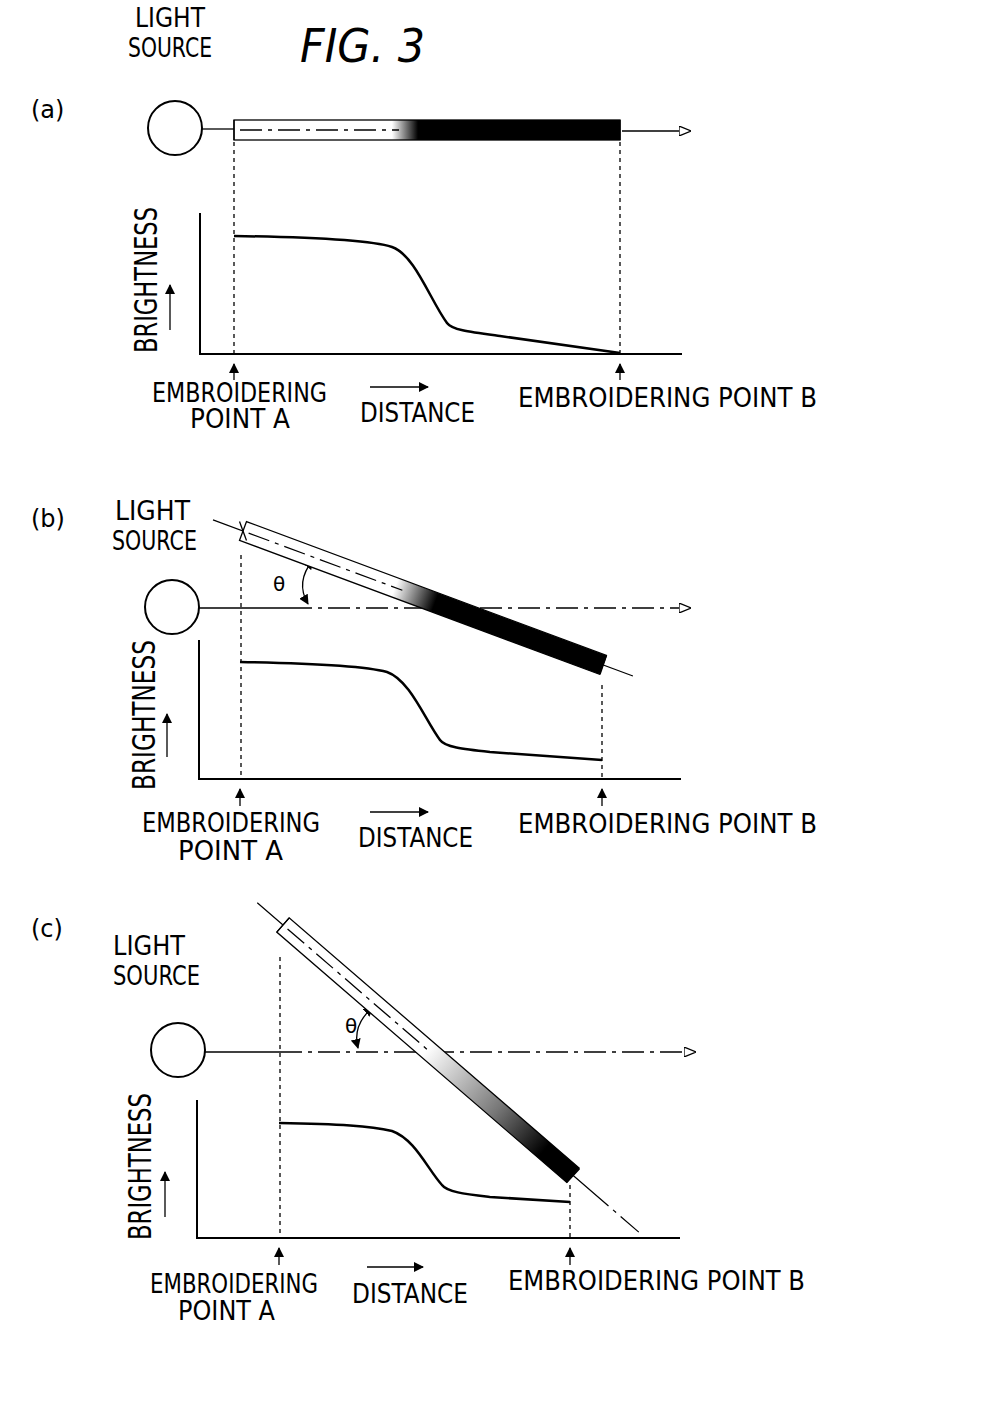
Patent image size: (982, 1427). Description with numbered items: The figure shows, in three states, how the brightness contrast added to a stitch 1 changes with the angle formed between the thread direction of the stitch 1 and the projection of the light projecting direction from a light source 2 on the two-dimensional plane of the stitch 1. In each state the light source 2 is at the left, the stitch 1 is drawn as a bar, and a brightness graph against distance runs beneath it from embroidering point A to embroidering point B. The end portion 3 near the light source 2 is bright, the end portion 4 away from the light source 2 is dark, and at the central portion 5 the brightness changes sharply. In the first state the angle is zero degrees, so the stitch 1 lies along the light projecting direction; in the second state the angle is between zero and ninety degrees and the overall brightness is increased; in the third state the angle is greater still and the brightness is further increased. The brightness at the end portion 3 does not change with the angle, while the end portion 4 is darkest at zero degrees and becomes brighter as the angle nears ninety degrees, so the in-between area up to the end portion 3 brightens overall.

The stitch 1 is at (368, 124).
The light source 2 is at (171, 112).
The end portion 3 is at (232, 124).
The end portion 4 is at (624, 129).
The central portion 5 is at (420, 118).